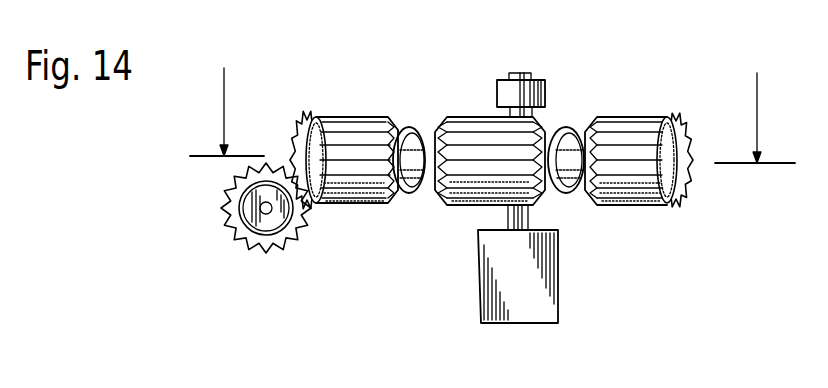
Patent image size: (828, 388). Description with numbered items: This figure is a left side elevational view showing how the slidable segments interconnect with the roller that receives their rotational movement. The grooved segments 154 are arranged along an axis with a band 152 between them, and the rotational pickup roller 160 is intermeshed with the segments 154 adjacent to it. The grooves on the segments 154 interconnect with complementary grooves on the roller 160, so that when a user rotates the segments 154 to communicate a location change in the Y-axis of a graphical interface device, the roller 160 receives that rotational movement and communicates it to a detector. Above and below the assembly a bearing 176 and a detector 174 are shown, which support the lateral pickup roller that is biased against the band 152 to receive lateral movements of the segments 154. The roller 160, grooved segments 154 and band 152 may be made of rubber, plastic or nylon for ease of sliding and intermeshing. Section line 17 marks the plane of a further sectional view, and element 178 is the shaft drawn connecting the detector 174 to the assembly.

The section line 17- 17 is at (492, 99).
The band 152 is at (433, 127).
The grooved segment 154 is at (349, 205).
The rotational pickup roller 160 is at (226, 211).
The detector 174 is at (556, 310).
The bearing 176 is at (497, 88).
The lower shaft 178 is at (530, 215).